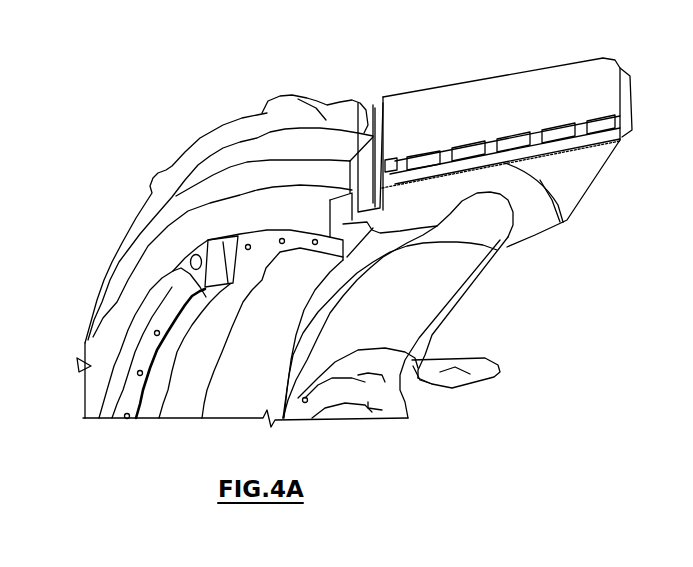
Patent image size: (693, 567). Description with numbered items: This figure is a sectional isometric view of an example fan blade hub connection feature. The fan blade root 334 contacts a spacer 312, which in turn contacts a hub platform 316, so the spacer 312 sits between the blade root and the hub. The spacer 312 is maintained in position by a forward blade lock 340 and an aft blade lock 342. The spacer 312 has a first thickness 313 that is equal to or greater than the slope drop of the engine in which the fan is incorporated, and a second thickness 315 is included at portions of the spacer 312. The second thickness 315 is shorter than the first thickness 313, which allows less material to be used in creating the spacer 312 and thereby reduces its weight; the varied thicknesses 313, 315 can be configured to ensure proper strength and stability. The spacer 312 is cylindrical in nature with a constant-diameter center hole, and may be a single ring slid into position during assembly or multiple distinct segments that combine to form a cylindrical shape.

The spacer 312 is at (563, 223).
The first thickness 313 is at (465, 174).
The second thickness 315 is at (563, 135).
The hub platform 316 is at (583, 170).
The fan blade root 334 is at (483, 107).
The forward blade lock 340 is at (372, 103).
The aft blade lock 342 is at (625, 82).